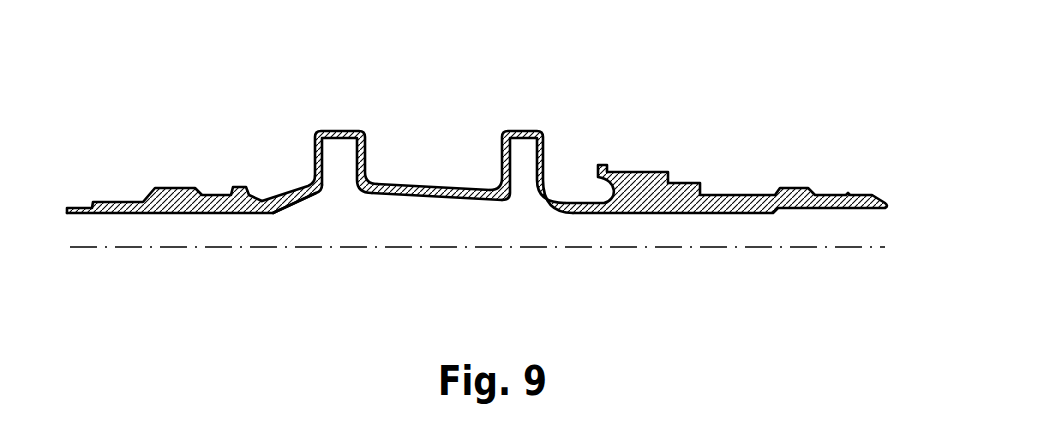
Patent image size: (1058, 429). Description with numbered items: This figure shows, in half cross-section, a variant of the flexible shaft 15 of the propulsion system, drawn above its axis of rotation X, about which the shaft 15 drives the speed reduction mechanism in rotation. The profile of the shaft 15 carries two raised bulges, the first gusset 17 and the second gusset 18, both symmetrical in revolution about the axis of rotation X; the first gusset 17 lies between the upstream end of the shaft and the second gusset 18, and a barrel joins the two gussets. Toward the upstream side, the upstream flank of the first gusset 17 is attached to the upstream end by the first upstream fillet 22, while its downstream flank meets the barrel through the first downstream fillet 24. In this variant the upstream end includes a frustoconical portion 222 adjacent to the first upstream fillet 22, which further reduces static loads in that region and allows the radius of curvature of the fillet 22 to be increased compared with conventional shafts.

The shaft 15 is at (911, 202).
The first gusset 17 is at (351, 108).
The second gusset 18 is at (526, 108).
The first upstream fillet 22 is at (322, 190).
The frustoconical portion 222 is at (283, 211).
The first downstream fillet 24 is at (366, 182).
The axis of rotation X is at (835, 249).